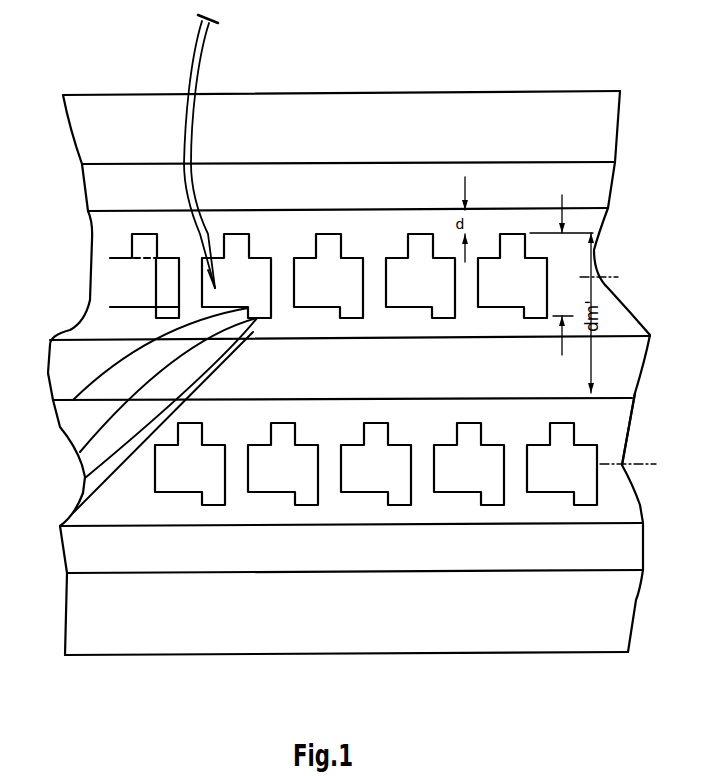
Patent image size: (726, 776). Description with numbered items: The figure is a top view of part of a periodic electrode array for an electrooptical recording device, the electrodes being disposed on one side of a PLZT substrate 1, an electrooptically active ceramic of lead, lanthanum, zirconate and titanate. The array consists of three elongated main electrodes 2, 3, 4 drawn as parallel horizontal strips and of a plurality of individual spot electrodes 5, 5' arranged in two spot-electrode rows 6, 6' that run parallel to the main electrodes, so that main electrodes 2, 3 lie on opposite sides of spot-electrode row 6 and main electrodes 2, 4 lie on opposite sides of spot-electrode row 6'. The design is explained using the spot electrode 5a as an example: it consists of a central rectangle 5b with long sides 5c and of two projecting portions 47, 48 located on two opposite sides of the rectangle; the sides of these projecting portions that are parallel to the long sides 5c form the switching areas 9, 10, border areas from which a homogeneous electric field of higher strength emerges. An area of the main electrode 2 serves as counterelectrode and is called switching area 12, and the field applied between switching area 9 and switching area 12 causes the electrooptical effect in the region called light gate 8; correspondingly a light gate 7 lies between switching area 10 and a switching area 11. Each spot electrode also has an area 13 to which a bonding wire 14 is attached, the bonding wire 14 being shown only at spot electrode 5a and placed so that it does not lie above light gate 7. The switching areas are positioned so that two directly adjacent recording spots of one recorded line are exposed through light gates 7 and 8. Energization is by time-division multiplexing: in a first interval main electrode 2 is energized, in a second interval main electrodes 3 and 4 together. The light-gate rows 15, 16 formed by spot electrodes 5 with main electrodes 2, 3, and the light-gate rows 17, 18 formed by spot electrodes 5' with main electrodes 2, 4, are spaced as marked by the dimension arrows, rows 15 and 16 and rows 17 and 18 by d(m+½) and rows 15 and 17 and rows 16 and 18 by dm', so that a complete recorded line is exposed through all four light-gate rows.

The PLZT substrate 1 is at (83, 133).
The main electrode 2 is at (626, 368).
The main electrode 3 is at (594, 183).
The main electrode 4 is at (635, 547).
The spot electrodes 5 is at (420, 179).
The spot electrodes 5' is at (376, 561).
The spot electrode 5a is at (200, 222).
The central rectangle 5b is at (144, 270).
The long sides 5c is at (133, 310).
The spot-electrode row 6 is at (619, 277).
The spot-electrode row 6' is at (651, 465).
The light gate 7 is at (243, 245).
The light gate 8 is at (84, 478).
The switching area 9 is at (80, 452).
The switching area 10 is at (247, 233).
The switching area 11 is at (237, 220).
The switching area 12 is at (73, 506).
The bonding-wire area 13 is at (203, 290).
The bonding wire 14 is at (190, 68).
The light-gate row 15 is at (568, 222).
The light-gate row 16 is at (613, 324).
The light-gate row 17 is at (590, 404).
The light-gate row 18 is at (618, 505).
The projecting portion 47 is at (253, 232).
The projecting portion 48 is at (57, 408).